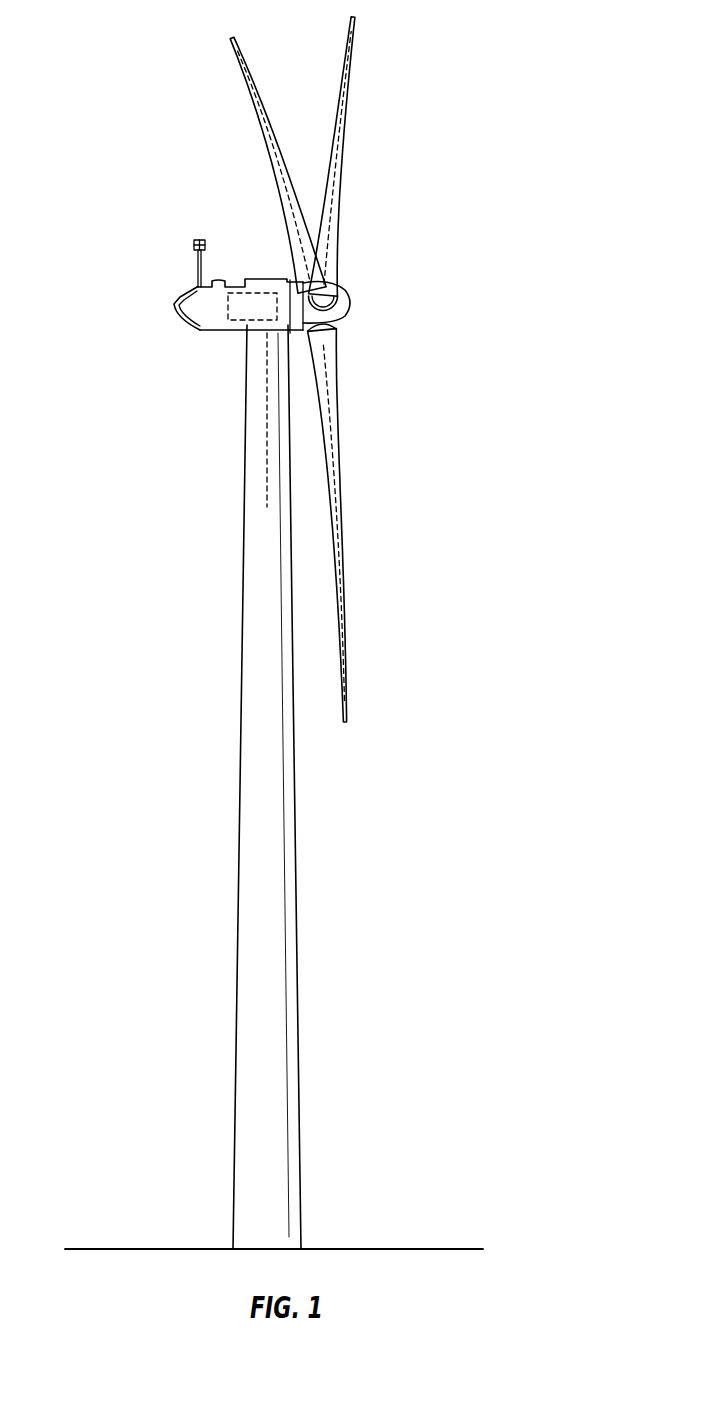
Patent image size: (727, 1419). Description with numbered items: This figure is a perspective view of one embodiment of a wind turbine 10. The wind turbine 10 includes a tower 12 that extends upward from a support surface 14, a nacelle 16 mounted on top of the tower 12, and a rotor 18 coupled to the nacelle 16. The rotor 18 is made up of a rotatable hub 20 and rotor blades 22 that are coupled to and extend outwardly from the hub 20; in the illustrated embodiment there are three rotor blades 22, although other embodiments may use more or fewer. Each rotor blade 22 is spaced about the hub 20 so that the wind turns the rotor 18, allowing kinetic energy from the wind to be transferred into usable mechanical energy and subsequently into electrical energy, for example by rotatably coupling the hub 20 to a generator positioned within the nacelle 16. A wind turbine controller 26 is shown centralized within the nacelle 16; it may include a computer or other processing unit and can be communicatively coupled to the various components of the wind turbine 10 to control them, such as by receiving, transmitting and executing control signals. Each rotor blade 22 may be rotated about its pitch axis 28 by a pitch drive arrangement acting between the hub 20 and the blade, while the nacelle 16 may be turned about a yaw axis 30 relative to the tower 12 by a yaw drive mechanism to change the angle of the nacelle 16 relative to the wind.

The wind turbine 10 is at (482, 143).
The tower 12 is at (272, 912).
The support surface 14 is at (150, 1249).
The nacelle 16 is at (208, 320).
The rotor 18 is at (357, 281).
The rotatable hub 20 is at (348, 312).
The rotor blade 22 is at (267, 117).
The wind turbine controller 26 is at (248, 278).
The pitch axis 28 is at (288, 202).
The yaw axis 30 is at (267, 440).